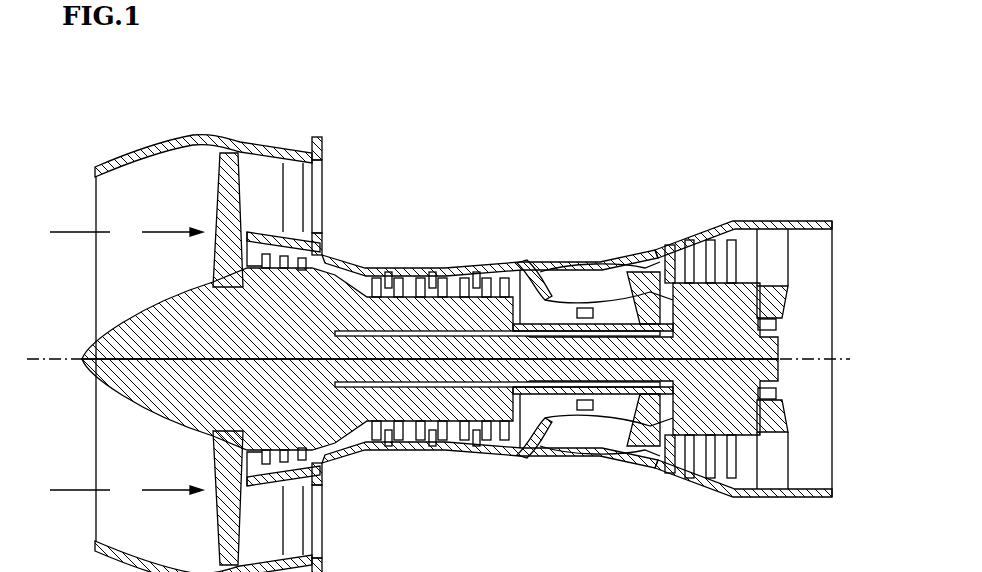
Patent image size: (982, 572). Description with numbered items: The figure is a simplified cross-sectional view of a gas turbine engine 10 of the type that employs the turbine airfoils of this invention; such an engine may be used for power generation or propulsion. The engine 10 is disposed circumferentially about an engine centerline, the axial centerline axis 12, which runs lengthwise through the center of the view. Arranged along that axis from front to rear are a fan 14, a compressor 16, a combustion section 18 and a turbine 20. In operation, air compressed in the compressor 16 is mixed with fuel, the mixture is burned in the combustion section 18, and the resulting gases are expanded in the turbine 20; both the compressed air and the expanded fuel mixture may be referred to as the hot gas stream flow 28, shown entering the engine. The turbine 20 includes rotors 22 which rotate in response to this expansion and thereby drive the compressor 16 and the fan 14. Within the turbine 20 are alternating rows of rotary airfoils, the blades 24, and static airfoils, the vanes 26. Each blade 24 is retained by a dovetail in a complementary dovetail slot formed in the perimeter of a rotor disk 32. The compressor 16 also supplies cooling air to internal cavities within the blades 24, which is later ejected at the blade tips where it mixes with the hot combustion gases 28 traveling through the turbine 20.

The gas turbine engine 10 is at (199, 108).
The axial centerline axis 12 is at (42, 359).
The fan 14 is at (218, 178).
The compressor 16 is at (520, 255).
The combustion section 18 is at (524, 255).
The turbine 20 is at (632, 247).
The rotors 22 is at (633, 397).
The blades 24 is at (735, 482).
The vanes 26 is at (688, 252).
The hot gas stream flow 28 is at (126, 361).
The rotor disk 32 is at (717, 402).